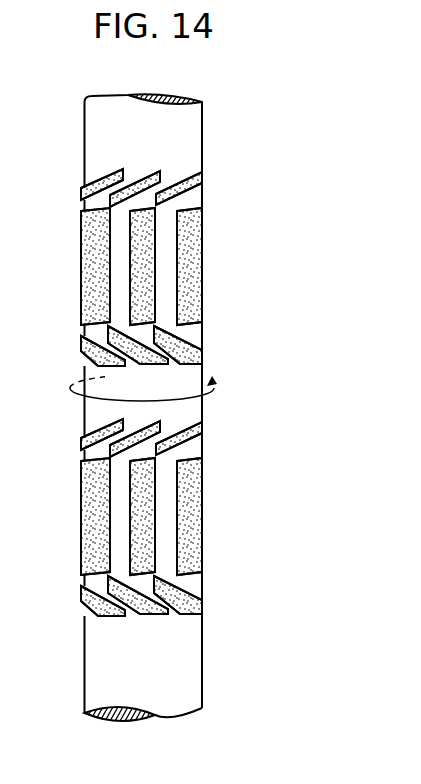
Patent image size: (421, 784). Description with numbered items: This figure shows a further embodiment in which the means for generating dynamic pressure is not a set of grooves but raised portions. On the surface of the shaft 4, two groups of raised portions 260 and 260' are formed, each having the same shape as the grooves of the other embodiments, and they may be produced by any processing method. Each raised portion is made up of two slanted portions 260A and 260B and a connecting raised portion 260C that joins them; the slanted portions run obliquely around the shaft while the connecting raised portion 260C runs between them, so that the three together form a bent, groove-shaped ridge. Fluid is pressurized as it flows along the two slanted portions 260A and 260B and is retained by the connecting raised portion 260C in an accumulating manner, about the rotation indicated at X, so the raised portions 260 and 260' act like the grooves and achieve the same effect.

The rod / shaft 4 is at (84, 160).
The raised portion 260 is at (179, 267).
The raised portion 260' is at (185, 517).
The slanted portion 260A is at (204, 188).
The slanted portion 260B is at (203, 358).
The connecting raised portion 260C is at (145, 291).
The rotation axis indicator X is at (211, 383).